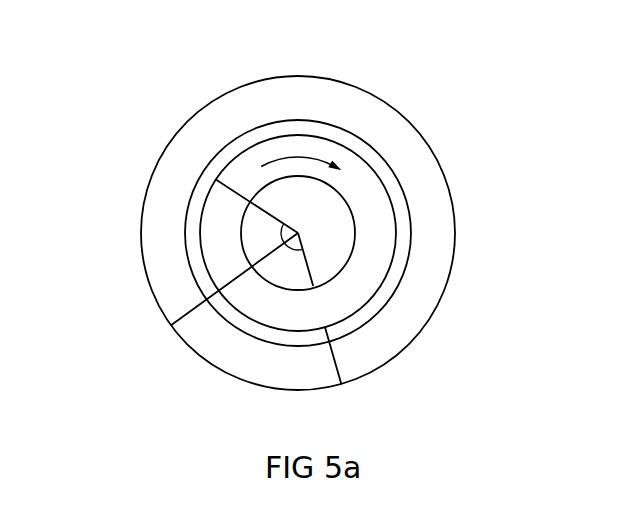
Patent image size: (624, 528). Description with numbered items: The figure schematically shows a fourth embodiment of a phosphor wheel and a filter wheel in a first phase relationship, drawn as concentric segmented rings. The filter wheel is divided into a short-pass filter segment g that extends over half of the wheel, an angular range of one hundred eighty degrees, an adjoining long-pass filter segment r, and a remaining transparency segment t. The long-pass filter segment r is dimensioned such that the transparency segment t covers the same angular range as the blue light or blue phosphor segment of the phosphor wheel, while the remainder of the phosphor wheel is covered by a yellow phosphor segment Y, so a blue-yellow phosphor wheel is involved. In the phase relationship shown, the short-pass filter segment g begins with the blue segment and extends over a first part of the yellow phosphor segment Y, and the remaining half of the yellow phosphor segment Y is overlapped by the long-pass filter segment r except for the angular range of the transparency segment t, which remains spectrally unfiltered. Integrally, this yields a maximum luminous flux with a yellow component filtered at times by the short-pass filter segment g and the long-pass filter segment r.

The short-pass filter segment g is at (308, 87).
The long-pass filter segment r is at (413, 292).
The yellow phosphor segment Y is at (355, 178).
The transparency segment t is at (240, 362).